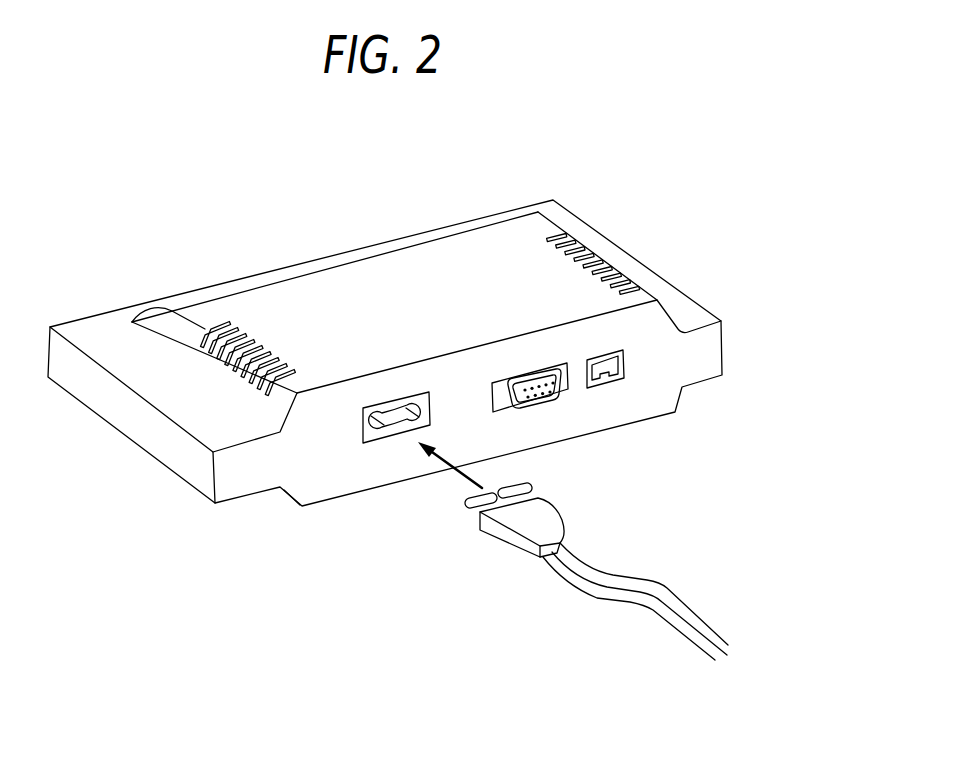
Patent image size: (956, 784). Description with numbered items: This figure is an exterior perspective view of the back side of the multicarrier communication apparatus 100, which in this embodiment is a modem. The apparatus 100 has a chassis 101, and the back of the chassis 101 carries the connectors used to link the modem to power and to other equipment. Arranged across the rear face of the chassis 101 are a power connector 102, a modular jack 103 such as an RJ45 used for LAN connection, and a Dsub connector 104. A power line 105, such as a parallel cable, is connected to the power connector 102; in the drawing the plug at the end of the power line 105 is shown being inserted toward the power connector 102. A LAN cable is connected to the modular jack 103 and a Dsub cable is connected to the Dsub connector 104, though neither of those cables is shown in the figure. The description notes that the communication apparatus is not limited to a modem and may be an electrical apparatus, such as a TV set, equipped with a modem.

The multicarrier communication apparatus 100 is at (309, 221).
The chassis 101 is at (175, 295).
The power connector 102 is at (395, 441).
The modular jack 103 is at (615, 380).
The Dsub connector 104 is at (557, 393).
The power line 105 is at (562, 577).